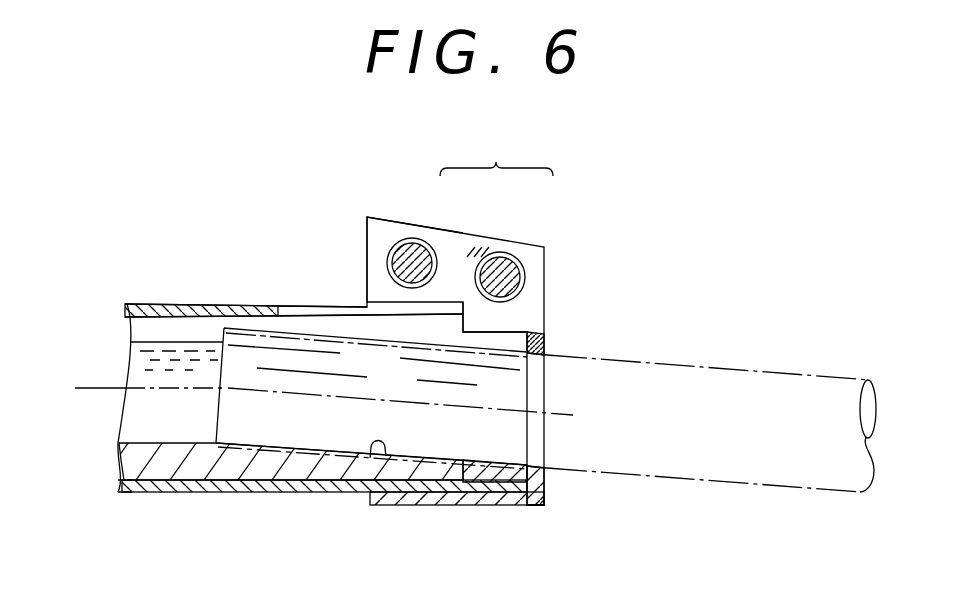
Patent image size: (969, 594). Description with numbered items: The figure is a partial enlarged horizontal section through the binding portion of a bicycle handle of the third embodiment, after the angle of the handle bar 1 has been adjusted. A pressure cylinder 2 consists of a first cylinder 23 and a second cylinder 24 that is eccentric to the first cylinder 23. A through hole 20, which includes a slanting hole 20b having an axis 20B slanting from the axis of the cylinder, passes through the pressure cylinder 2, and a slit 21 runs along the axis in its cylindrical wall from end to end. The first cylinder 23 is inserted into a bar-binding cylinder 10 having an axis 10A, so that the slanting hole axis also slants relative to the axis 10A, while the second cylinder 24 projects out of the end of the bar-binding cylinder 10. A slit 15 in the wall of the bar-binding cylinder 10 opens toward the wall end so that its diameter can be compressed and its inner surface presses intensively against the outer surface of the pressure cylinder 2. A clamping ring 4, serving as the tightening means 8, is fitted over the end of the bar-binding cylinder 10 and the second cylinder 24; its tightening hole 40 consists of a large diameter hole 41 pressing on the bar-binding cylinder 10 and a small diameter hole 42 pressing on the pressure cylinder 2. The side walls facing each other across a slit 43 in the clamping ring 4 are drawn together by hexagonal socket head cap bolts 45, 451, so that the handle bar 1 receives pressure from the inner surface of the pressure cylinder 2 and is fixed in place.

The handle bar 1 is at (728, 367).
The pressure cylinder 2 is at (280, 468).
The clamping ring 4 is at (425, 500).
The tightening means 8 is at (582, 202).
The bar-binding cylinder 10 is at (193, 485).
The axis of the bar-binding cylinder 10A is at (90, 388).
The slit 15 is at (308, 308).
The through hole 20 is at (345, 437).
The slanting hole 20b is at (373, 453).
The axis of the slanting hole 20B is at (573, 417).
The slit 21 is at (355, 323).
The first cylinder 23 is at (128, 483).
The second cylinder 24 is at (492, 477).
The tightening hole 40 is at (496, 154).
The large diameter hole 41 is at (440, 302).
The small diameter hole 42 is at (487, 330).
The slit 43 is at (527, 310).
The bolt 45 is at (520, 277).
The bolt 451 is at (403, 242).